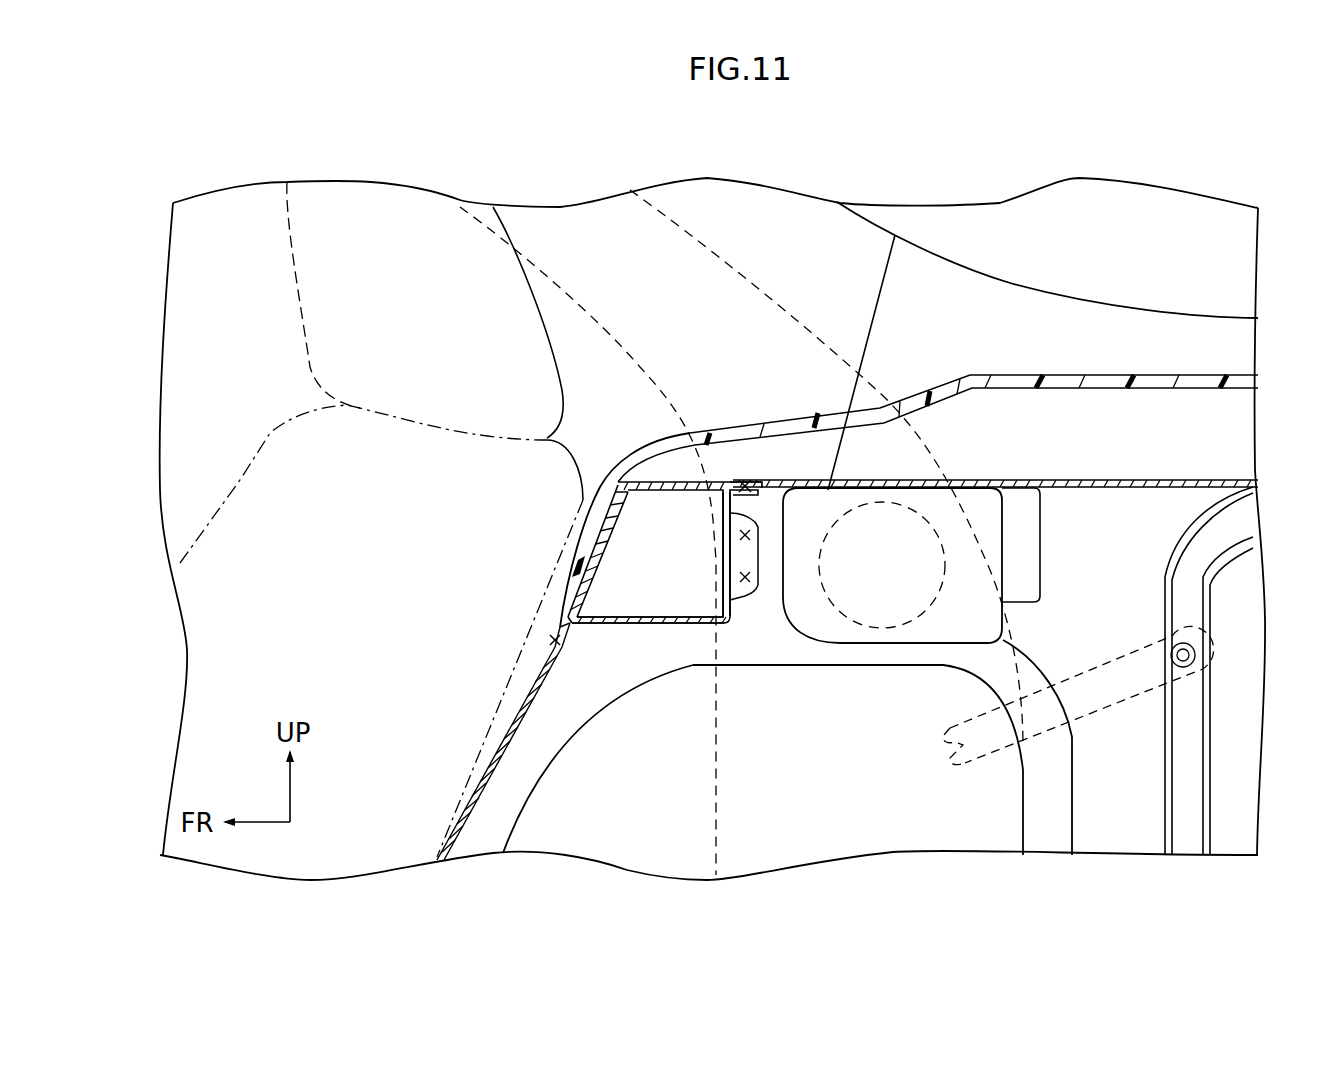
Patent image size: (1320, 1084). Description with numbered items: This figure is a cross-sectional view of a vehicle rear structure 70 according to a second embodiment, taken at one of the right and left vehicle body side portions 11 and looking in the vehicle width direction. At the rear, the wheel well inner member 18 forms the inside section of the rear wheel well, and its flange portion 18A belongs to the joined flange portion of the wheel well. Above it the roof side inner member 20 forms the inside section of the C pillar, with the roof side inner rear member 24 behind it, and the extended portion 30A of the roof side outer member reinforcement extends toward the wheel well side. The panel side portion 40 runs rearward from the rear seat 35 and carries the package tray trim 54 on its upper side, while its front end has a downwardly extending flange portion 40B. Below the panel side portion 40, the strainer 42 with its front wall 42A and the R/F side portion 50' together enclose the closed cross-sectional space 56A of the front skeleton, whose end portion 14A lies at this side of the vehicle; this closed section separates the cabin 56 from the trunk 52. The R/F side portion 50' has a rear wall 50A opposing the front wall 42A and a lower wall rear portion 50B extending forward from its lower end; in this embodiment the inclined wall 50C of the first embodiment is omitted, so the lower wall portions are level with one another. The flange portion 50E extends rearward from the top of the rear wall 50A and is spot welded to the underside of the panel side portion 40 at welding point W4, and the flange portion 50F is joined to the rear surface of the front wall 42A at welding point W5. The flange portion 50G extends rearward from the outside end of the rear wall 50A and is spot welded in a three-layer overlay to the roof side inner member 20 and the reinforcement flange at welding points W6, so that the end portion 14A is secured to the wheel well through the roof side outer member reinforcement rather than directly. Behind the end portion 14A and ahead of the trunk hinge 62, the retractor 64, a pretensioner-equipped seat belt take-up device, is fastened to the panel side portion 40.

The vehicle body side portion 11 is at (998, 237).
The wheel well inner member 18 is at (880, 855).
The flange portion 18A is at (762, 647).
The roof side inner member 20 is at (862, 218).
The roof side inner rear member 24 is at (1148, 306).
The extended portion 30A is at (705, 237).
The rear seat 35 is at (210, 510).
The panel side portion 40 is at (1088, 478).
The flange portion 40B is at (583, 495).
The strainer 42 is at (481, 748).
The front wall 42A is at (515, 688).
The R/F side portion 50' is at (667, 611).
The rear wall 50A is at (722, 535).
The lower wall rear portion 50B is at (678, 617).
The inclined wall 50C is at (607, 613).
The flange portion 50E is at (750, 485).
The flange portion 50F is at (557, 650).
The flange portion 50G is at (753, 535).
The trunk 52 is at (782, 817).
The package tray trim 54 is at (988, 375).
The cabin 56 is at (207, 320).
The closed cross-sectional space 56A is at (580, 540).
The trunk hinge 62 is at (1163, 593).
The retractor 64 is at (942, 645).
The vehicle rear structure 70 is at (613, 237).
The end portion 14A is at (678, 462).
The welding point W4 is at (748, 484).
The welding point W5 is at (549, 640).
The welding points W6 is at (853, 590).